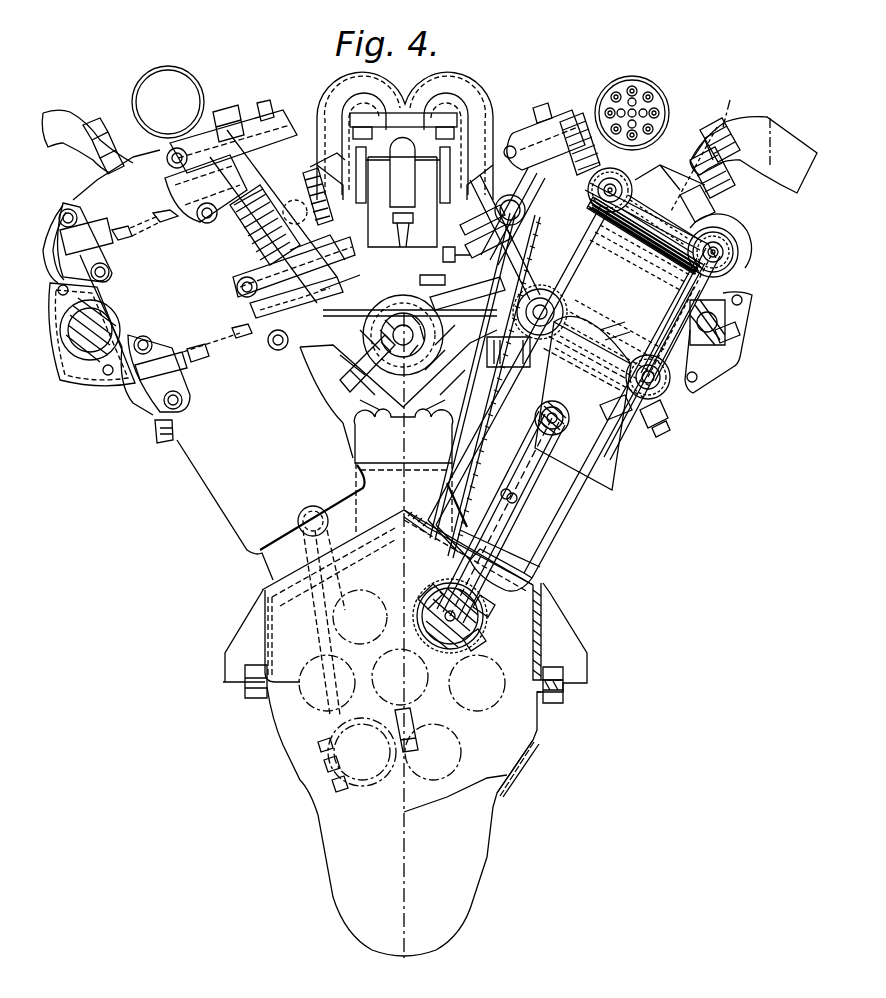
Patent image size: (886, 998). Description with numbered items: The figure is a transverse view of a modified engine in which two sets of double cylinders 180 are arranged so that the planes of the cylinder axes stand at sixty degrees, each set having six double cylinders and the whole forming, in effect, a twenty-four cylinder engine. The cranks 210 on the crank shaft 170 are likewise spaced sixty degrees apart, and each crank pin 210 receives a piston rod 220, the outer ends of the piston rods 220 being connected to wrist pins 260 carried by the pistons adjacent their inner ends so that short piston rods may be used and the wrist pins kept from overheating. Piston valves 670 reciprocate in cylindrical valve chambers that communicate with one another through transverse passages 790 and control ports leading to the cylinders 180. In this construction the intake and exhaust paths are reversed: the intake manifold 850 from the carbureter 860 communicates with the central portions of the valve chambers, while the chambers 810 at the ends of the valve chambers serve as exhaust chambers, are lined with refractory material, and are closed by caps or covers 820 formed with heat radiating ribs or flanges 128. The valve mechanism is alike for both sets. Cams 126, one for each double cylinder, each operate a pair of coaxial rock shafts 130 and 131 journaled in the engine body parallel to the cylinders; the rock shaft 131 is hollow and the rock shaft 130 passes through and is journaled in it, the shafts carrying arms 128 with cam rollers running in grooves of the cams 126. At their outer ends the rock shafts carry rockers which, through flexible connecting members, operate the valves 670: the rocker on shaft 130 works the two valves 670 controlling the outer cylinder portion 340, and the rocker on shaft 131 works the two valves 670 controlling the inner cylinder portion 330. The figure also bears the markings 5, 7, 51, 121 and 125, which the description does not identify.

The rocker cover 5 is at (750, 270).
The section line 7 is at (740, 109).
The rocker arm assembly 51 is at (515, 129).
The valve stem 121 is at (434, 271).
The cam follower 125 is at (337, 383).
The cam 126 is at (440, 385).
The heat radiating ribs or flanges 128 is at (403, 471).
The rock shaft 130 is at (447, 353).
The rock shaft 131 is at (444, 250).
The crank shaft 170 is at (326, 718).
The double cylinders 180 is at (606, 460).
The crank pin 210 is at (465, 607).
The piston rod 220 is at (531, 505).
The wrist pin 260 is at (545, 423).
The inner cylinder portion 330 is at (548, 510).
The outer cylinder portion 340 is at (717, 207).
The piston valve 670 is at (640, 170).
The transverse passage 790 is at (572, 380).
The exhaust chamber 810 is at (733, 325).
The cap or cover 820 is at (95, 350).
The intake manifold 850 is at (322, 120).
The carbureter 860 is at (386, 205).